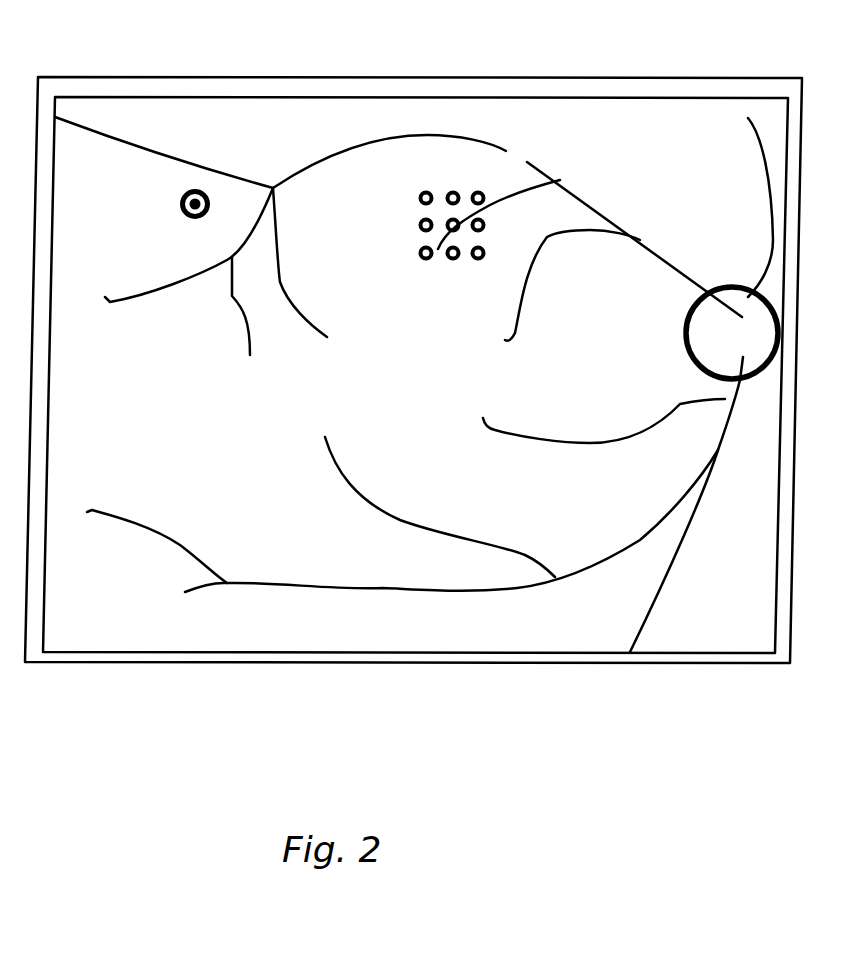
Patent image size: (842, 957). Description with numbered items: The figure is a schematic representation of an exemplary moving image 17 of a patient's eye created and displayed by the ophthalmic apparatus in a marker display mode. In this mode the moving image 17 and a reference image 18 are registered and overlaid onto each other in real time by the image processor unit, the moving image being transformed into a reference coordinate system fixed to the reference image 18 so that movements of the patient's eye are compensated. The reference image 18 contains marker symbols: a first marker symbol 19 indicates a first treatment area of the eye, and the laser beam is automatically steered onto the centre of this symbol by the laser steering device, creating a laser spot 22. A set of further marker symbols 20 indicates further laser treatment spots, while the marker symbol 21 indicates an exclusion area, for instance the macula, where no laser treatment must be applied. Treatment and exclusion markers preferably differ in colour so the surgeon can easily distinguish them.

The moving image 17 is at (217, 97).
The reference image 18 is at (312, 78).
The first marker symbol 19 is at (183, 217).
The further marker symbols 20 is at (419, 253).
The exclusion area marker symbol 21 is at (753, 390).
The laser spot 22 is at (195, 190).